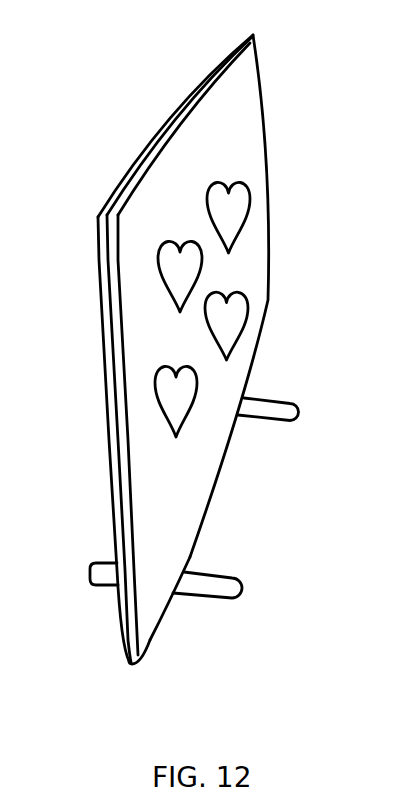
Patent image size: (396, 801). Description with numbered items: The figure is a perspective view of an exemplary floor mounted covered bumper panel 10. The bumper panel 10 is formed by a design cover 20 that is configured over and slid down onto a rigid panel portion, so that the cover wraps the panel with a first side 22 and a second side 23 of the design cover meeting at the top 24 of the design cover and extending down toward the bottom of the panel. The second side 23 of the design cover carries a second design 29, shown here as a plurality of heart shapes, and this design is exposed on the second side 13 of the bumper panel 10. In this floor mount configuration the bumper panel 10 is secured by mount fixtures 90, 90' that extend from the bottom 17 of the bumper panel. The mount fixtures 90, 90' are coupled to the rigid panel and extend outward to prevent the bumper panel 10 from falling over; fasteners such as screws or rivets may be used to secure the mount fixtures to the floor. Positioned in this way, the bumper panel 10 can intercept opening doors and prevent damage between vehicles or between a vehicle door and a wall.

The bumper panel 10 is at (152, 83).
The design cover 20 is at (203, 140).
The first side of the design cover 22 is at (98, 272).
The second side of the design cover 23 is at (137, 303).
The top of the design cover 24 is at (158, 134).
The second design 29 is at (172, 388).
The second side of the bumper panel 13 is at (148, 597).
The bottom of the bumper panel 17 is at (131, 664).
The mount fixture 90 is at (221, 564).
The mount fixture 90' is at (285, 388).